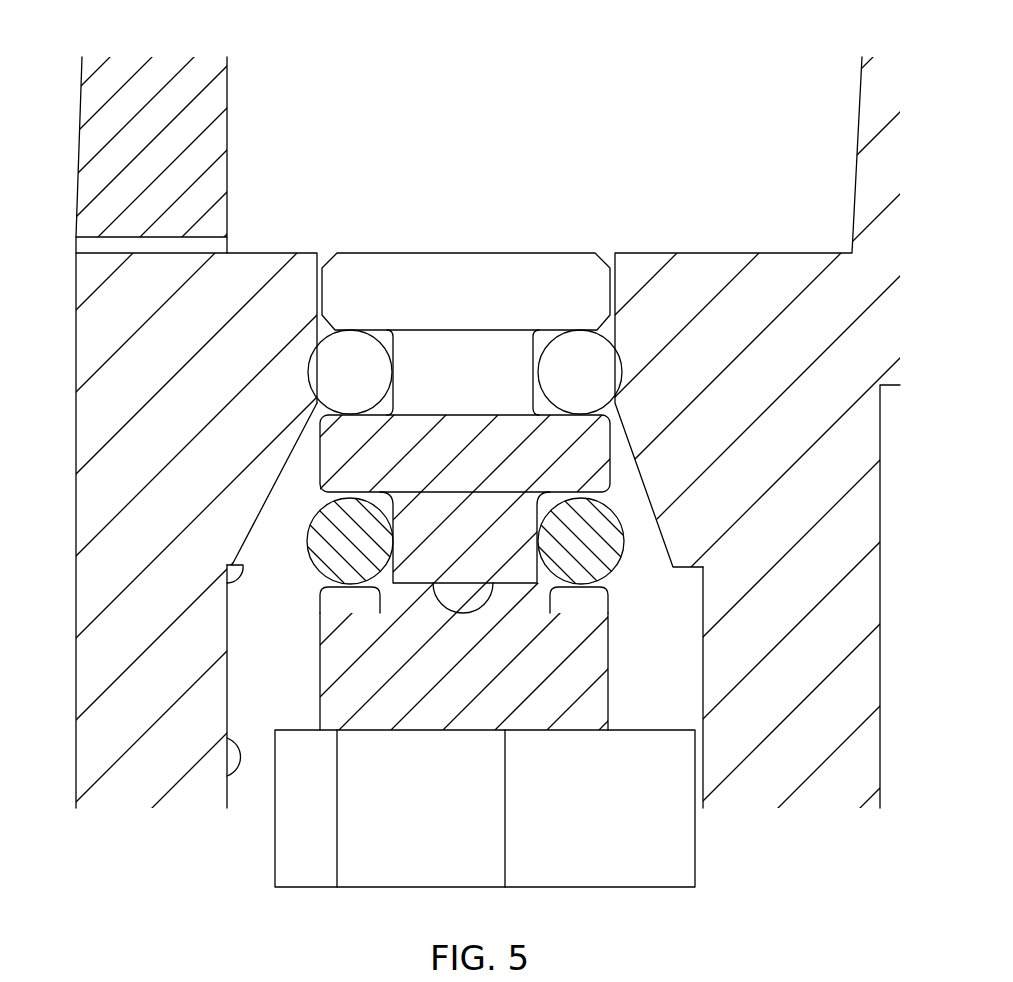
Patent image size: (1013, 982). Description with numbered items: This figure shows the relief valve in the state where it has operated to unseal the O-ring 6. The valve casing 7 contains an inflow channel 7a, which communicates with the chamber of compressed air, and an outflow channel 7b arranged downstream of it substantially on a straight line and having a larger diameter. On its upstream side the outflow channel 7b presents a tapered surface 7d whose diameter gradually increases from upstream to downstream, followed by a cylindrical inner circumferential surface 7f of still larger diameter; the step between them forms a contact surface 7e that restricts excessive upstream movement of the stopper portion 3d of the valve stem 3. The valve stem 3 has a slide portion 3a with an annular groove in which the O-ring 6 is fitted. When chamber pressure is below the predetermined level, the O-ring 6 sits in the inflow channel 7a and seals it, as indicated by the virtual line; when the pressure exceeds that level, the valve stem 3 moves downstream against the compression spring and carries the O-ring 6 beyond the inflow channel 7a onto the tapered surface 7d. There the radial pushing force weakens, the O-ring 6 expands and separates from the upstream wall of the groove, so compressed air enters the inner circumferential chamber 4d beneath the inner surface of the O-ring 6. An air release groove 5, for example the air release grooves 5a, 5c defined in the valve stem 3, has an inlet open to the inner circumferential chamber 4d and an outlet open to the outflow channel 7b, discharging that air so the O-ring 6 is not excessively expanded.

The valve casing 7 is at (143, 357).
The inflow channel 7a is at (404, 303).
The outflow channel 7b is at (270, 677).
The tapered surface 7d is at (284, 508).
The contact surface 7e is at (230, 575).
The cylindrical inner circumferential surface 7f is at (232, 773).
The valve stem 3 is at (655, 693).
The slide portion 3a is at (474, 417).
The stopper portion 3d is at (697, 778).
The inner circumferential chamber 4d is at (547, 337).
The air release groove 5 is at (455, 630).
The air release groove 5a is at (343, 598).
The air release groove 5c is at (590, 598).
The O-ring 6 is at (337, 544).